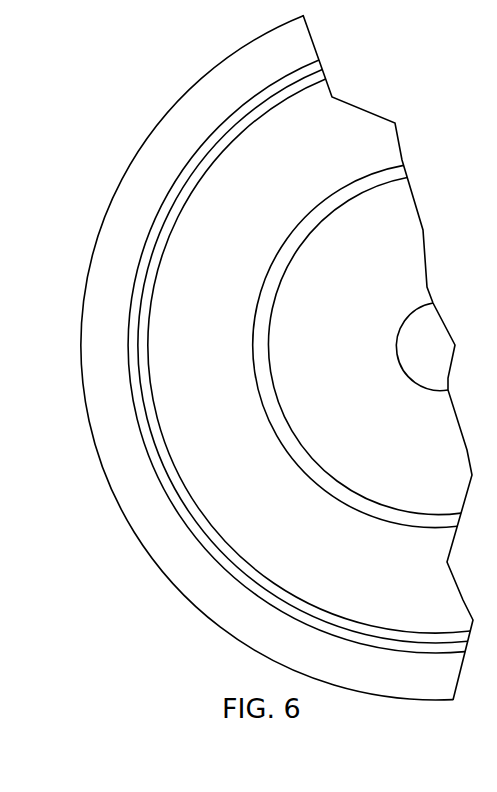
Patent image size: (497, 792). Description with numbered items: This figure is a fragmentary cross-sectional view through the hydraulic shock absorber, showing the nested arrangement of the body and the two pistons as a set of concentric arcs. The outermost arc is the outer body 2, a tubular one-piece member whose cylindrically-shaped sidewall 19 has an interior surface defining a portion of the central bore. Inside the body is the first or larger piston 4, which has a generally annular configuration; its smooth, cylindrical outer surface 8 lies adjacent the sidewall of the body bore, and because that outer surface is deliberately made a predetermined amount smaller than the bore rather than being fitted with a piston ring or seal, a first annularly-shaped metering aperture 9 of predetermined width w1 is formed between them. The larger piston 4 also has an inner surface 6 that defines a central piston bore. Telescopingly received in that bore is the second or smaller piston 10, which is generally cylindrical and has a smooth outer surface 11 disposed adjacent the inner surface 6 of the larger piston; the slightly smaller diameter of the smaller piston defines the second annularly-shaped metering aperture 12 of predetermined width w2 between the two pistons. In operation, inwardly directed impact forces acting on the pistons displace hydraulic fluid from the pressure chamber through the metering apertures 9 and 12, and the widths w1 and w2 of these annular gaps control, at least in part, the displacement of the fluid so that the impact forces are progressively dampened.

The outer body 2 is at (110, 442).
The first or larger piston 4 is at (282, 356).
The inner surface 6 is at (272, 423).
The outer surface 8 is at (148, 335).
The first annularly-shaped metering aperture 9 is at (140, 367).
The second or smaller piston 10 is at (404, 359).
The outer surface 11 is at (282, 407).
The second annularly-shaped metering aperture 12 is at (268, 392).
The cylindrically-shaped sidewall 19 is at (128, 340).
The width of first metering aperture w1 is at (92, 310).
The width of second metering aperture w2 is at (210, 370).